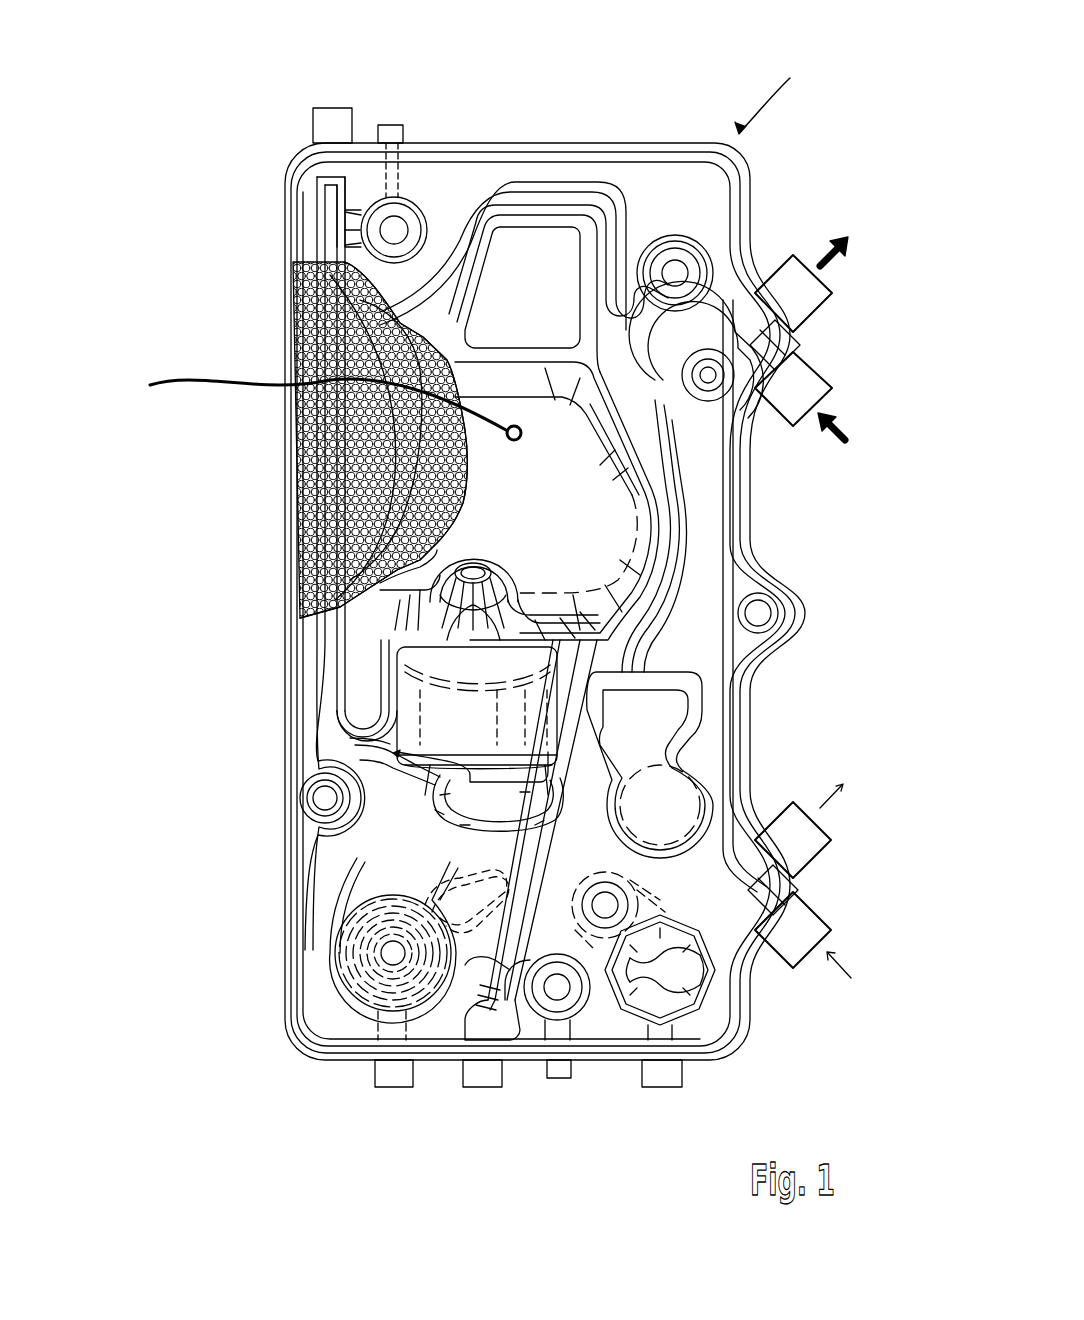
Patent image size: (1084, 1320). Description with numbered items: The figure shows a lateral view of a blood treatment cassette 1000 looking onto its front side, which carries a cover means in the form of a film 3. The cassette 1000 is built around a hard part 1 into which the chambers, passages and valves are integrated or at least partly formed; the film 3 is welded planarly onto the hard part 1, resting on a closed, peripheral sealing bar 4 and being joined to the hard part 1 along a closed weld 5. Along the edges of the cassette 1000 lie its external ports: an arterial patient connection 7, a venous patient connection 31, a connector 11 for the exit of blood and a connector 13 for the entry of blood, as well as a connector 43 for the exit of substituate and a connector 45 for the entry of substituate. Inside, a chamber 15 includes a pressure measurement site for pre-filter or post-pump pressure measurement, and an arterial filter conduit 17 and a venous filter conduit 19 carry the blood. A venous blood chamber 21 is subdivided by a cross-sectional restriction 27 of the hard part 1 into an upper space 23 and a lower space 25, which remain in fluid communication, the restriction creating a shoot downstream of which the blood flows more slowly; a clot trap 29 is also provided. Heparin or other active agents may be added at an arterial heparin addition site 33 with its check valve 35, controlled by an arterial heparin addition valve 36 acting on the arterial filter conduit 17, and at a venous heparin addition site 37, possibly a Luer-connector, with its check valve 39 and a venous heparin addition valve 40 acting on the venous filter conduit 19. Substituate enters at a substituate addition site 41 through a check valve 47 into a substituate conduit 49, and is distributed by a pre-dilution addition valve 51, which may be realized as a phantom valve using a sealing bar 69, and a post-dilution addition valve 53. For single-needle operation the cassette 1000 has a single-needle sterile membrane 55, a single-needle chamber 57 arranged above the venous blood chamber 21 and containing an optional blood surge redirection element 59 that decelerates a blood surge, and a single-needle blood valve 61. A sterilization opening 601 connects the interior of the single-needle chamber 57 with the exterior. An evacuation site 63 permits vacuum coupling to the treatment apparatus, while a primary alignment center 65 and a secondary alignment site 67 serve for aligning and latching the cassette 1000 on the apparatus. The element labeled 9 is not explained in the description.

The hard part 1 is at (634, 130).
The blood treatment cassette 1000 is at (828, 73).
The film 3 is at (338, 517).
The sealing bar 4 is at (298, 478).
The weld 5 is at (292, 432).
The arterial patient connection 7 is at (662, 1087).
The pump element 9 is at (673, 978).
The connector for the exit of blood 11 is at (822, 845).
The connector for the entry of blood 13 is at (822, 935).
The chamber 15 is at (678, 798).
The arterial filter conduit 17 is at (482, 1087).
The venous filter conduit 19 is at (333, 108).
The venous blood chamber 21 is at (392, 753).
The upper space 23 is at (393, 728).
The lower space 25 is at (422, 830).
The cross-sectional restriction 27 is at (458, 779).
The clot trap 29 is at (360, 960).
The venous patient connection 31 is at (394, 1087).
The arterial heparin addition site 33 is at (558, 1078).
The check valve 35 is at (560, 990).
The arterial heparin addition valve 36 is at (456, 1017).
The venous heparin addition site 37 is at (391, 125).
The check valve 39 is at (396, 228).
The venous heparin addition valve 40 is at (345, 222).
The substituate addition site 41 is at (710, 378).
The connector for the exit of substituate 43 is at (815, 300).
The connector for the entry of substituate 45 is at (815, 400).
The check valve 47 is at (678, 273).
The substituate conduit 49 is at (592, 200).
The pre-dilution addition valve 51 is at (657, 653).
The post-dilution addition valve 53 is at (335, 345).
The single-needle sterile membrane 55 is at (528, 240).
The single-needle chamber 57 is at (615, 500).
The blood surge redirection element 59 is at (471, 578).
The single-needle blood valve 61 is at (453, 643).
The evacuation site 63 is at (605, 908).
The primary alignment center 65 is at (762, 612).
The secondary alignment site 67 is at (323, 797).
The sealing bar 69 is at (690, 526).
The sterilization opening 601 is at (294, 406).